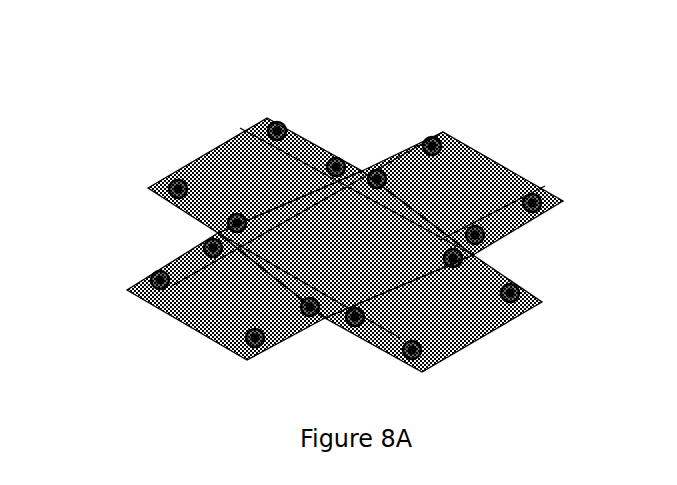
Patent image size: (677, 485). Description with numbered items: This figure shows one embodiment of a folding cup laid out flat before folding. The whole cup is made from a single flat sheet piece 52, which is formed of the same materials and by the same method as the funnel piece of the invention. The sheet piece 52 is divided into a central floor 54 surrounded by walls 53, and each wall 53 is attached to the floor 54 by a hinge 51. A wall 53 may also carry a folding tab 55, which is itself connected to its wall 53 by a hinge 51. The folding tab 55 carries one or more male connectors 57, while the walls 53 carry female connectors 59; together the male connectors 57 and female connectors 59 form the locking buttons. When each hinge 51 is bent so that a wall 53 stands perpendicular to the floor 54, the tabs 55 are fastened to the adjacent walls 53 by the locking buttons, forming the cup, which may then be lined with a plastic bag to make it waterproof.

The hinge 51 is at (158, 302).
The flat sheet piece 52 is at (217, 145).
The wall 53 is at (467, 145).
The floor 54 is at (335, 320).
The folding tab 55 is at (553, 190).
The male connector 57 is at (143, 275).
The female connector 59 is at (168, 182).